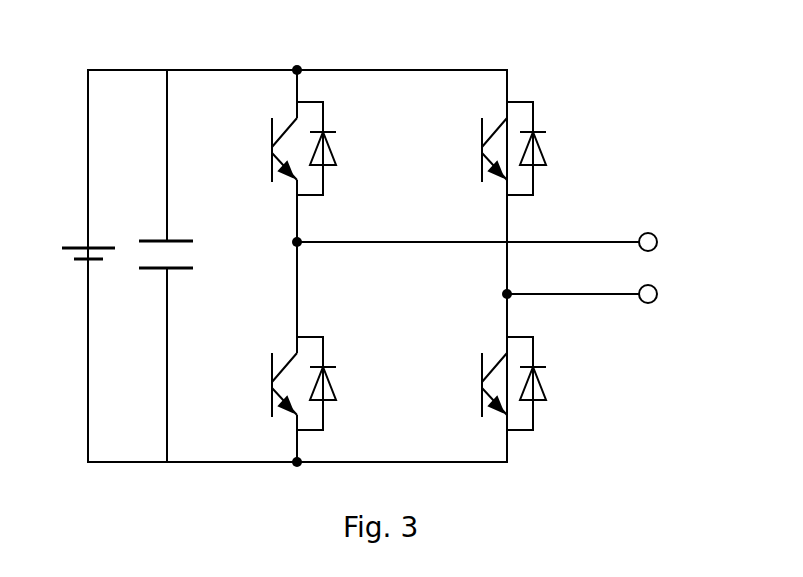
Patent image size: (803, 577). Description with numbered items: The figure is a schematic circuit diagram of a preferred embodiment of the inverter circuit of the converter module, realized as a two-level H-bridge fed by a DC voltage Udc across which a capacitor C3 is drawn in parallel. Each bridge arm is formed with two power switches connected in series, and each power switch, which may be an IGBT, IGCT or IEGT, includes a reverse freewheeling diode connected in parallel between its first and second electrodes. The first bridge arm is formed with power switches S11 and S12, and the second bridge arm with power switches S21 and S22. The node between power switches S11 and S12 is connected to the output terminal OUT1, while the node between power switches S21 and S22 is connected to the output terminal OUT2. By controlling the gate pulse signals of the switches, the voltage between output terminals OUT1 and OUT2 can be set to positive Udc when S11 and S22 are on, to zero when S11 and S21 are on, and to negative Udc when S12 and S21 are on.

The DC voltage Udc is at (75, 266).
The capacitor C3 is at (182, 266).
The power switch S11 is at (276, 148).
The power switch S12 is at (279, 383).
The power switch S21 is at (487, 148).
The power switch S22 is at (488, 383).
The output terminal OUT1 is at (507, 243).
The output terminal OUT2 is at (612, 295).